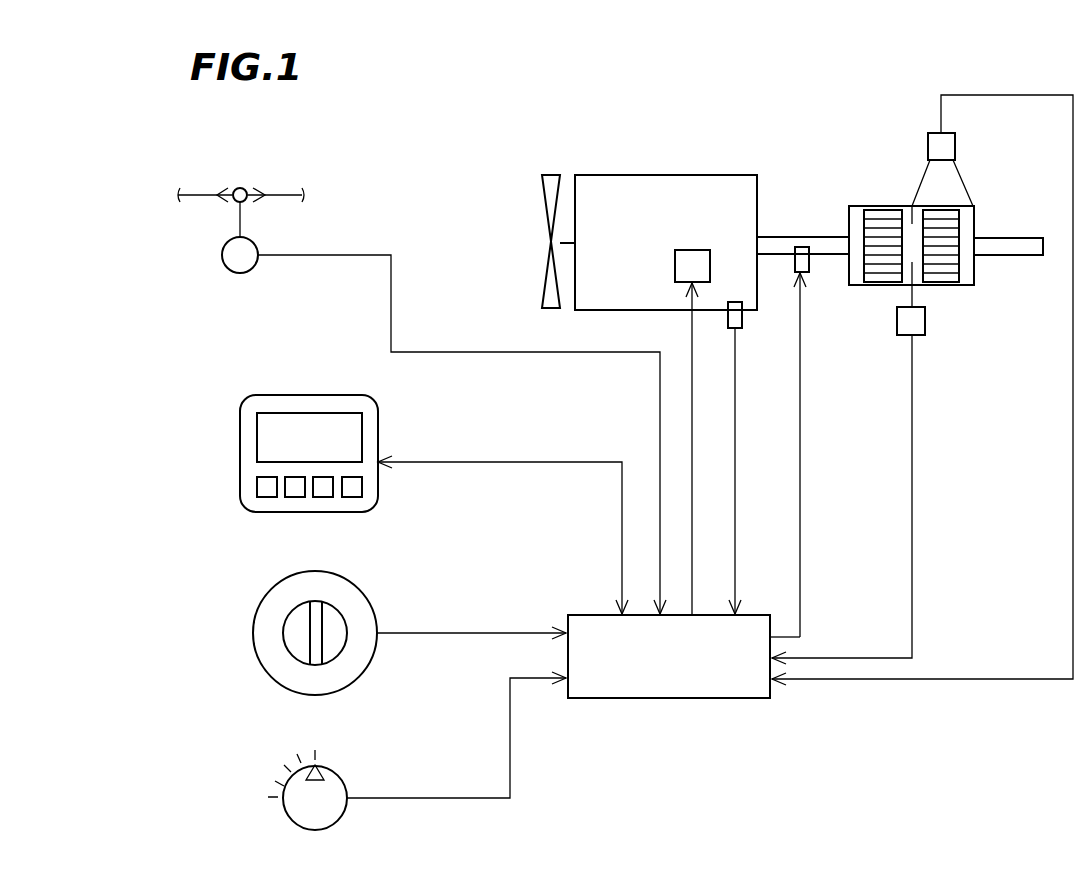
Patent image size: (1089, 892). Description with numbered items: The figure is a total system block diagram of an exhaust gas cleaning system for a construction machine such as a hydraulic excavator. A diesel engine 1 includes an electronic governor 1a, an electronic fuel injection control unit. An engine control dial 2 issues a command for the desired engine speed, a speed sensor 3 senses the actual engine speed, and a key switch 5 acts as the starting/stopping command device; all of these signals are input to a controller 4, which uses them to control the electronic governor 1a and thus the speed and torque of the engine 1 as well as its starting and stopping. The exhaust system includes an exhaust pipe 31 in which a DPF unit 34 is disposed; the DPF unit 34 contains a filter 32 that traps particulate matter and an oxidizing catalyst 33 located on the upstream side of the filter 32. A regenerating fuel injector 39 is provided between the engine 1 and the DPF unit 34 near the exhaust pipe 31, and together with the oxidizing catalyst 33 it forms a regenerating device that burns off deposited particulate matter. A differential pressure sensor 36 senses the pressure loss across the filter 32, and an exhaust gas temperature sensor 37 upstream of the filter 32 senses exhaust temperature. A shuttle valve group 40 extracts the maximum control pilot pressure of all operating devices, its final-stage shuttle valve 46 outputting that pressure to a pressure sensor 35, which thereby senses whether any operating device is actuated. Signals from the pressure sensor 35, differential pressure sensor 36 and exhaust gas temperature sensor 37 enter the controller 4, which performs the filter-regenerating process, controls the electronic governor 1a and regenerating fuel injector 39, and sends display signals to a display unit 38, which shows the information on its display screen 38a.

The diesel engine 1 is at (670, 173).
The electronic governor 1a is at (693, 248).
The engine control dial 2 is at (284, 812).
The speed sensor 3 is at (742, 318).
The controller 4 is at (668, 700).
The key switch 5 is at (253, 636).
The exhaust pipe 31 is at (1012, 238).
The filter 32 is at (952, 272).
The oxidizing catalyst 33 is at (878, 218).
The DPF unit 34 is at (931, 224).
The pressure sensor 35 is at (240, 273).
The differential pressure sensor 36 is at (955, 145).
The exhaust gas temperature sensor 37 is at (925, 320).
The display unit 38 is at (302, 453).
The display screen 38a is at (257, 440).
The regenerating fuel injector 39 is at (809, 260).
The shuttle valve group 40 is at (244, 182).
The shuttle valve 46 is at (258, 205).